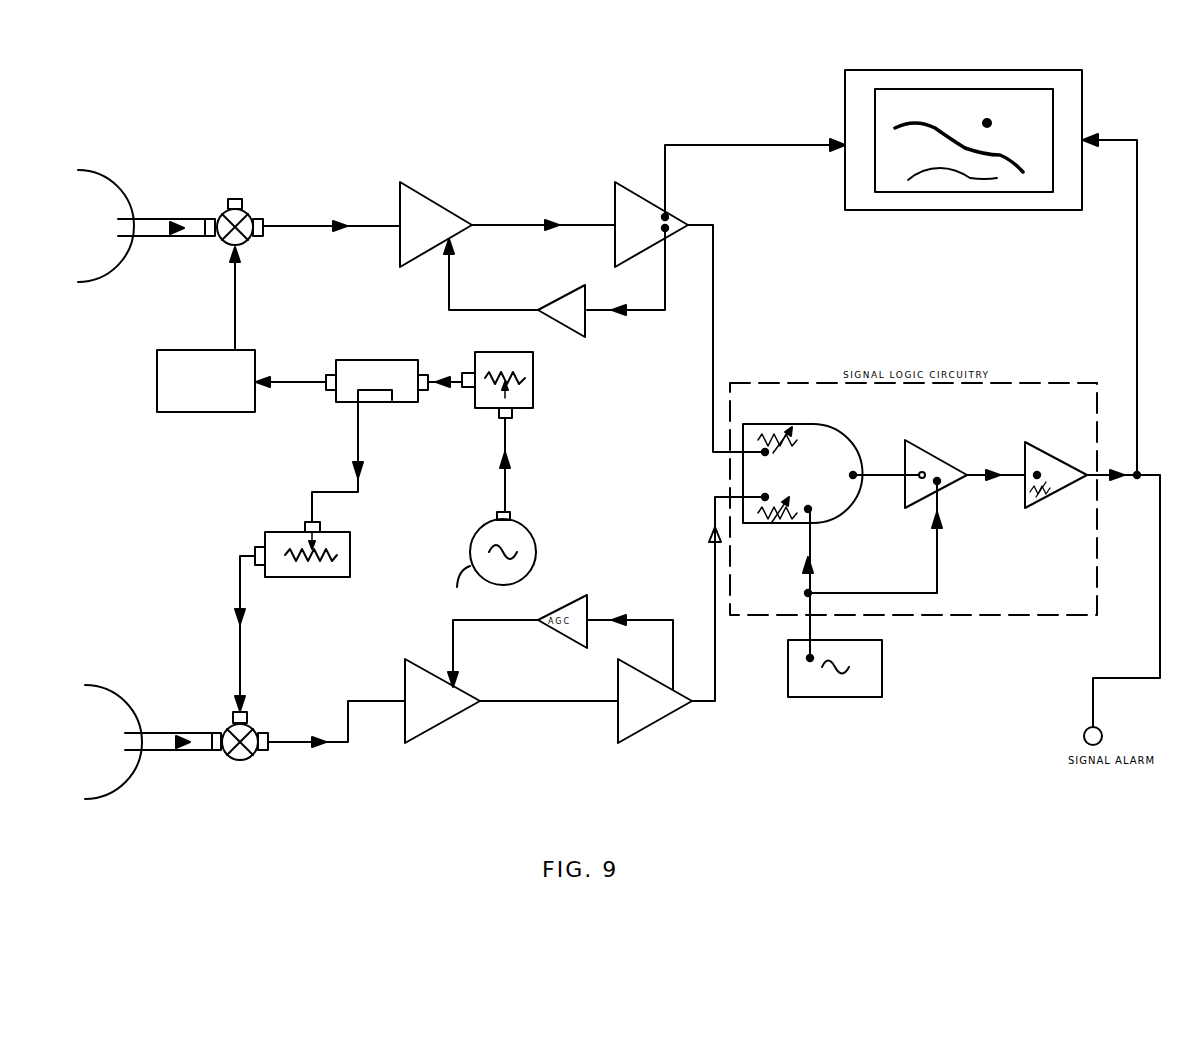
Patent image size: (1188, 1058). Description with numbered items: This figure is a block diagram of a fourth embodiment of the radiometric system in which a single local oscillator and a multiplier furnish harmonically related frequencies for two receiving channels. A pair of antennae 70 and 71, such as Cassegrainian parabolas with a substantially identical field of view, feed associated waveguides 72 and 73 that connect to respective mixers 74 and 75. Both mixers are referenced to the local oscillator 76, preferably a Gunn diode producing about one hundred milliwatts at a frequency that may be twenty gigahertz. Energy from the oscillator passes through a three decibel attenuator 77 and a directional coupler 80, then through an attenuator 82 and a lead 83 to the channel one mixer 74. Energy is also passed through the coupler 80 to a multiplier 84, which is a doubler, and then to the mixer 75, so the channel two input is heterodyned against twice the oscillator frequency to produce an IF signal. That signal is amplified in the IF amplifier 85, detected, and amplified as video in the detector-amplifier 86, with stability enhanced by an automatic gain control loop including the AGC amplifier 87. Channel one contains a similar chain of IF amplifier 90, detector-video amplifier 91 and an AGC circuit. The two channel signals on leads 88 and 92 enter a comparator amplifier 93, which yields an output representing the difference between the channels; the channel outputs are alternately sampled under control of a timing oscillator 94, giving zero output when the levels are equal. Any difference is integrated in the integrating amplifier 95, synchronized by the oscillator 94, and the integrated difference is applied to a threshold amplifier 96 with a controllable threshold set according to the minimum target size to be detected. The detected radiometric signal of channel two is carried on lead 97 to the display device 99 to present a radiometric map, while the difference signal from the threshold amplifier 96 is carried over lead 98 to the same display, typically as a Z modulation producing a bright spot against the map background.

The antenna 70 is at (120, 698).
The antenna 71 is at (128, 190).
The waveguide 72 is at (175, 731).
The waveguide 73 is at (173, 216).
The mixer 74 is at (247, 760).
The mixer 75 is at (245, 214).
The local oscillator 76 is at (530, 530).
The 3 db attenuator 77 is at (533, 388).
The directional coupler 80 is at (387, 360).
The attenuator 82 is at (352, 537).
The lead 83 is at (263, 637).
The multiplier 84 is at (157, 384).
The IF amplifier 85 is at (460, 233).
The detector-amplifier 86 is at (613, 197).
The AGC amplifier 87 is at (573, 333).
The lead 88 is at (713, 353).
The IF amplifier 90 is at (427, 658).
The detector-video amplifier 91 is at (617, 725).
The lead 92 is at (713, 560).
The comparator amplifier 93 is at (825, 423).
The timing oscillator 94 is at (852, 697).
The integrating amplifier 95 is at (950, 487).
The threshold amplifier 96 is at (1035, 443).
The lead 97 is at (755, 143).
The lead 98 is at (1137, 290).
The display device 99 is at (847, 193).